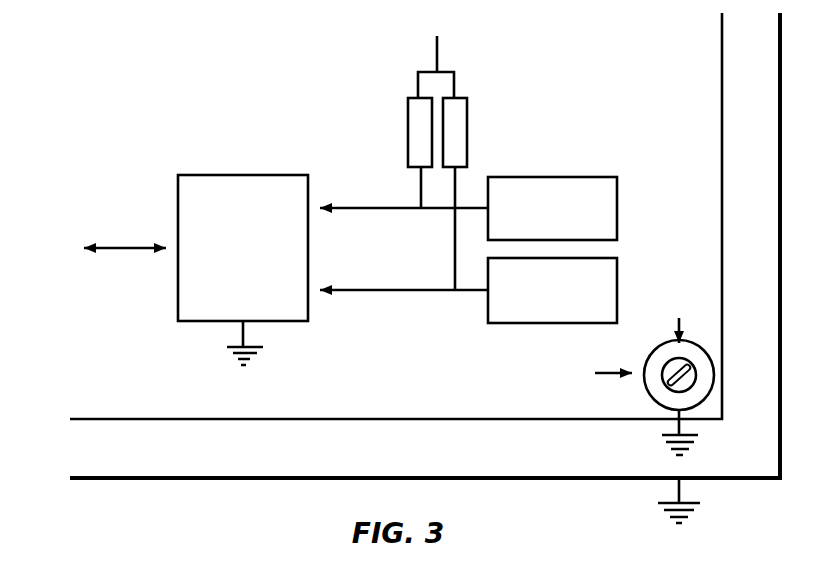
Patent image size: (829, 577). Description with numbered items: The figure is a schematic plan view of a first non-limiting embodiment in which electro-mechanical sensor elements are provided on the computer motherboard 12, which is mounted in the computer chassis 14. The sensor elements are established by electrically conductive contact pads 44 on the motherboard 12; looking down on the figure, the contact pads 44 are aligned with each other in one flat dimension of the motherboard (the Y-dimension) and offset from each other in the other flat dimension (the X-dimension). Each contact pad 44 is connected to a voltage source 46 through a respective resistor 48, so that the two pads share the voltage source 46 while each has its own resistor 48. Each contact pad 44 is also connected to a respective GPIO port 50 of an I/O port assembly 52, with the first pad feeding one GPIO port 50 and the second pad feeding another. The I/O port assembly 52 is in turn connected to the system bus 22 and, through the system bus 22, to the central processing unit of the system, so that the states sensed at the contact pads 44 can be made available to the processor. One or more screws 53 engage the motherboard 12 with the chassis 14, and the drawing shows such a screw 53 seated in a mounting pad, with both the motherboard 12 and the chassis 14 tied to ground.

The computer motherboard 12 is at (203, 419).
The computer chassis 14 is at (203, 478).
The system bus 22 is at (97, 250).
The contact pads 44 is at (568, 177).
The voltage source 46 is at (457, 80).
The resistor 48 is at (467, 115).
The GPIO port 50 is at (330, 210).
The I/O port assembly 52 is at (223, 175).
The screw 53 is at (682, 333).